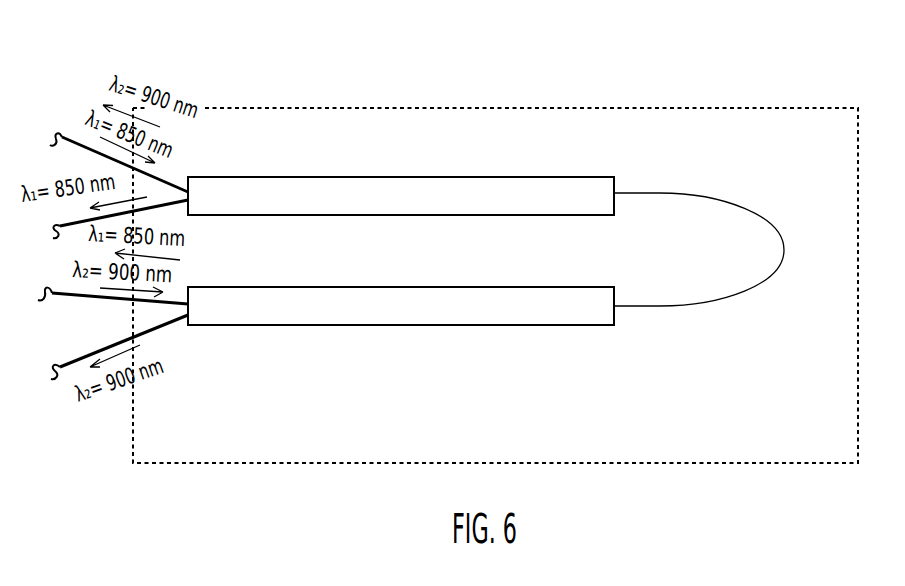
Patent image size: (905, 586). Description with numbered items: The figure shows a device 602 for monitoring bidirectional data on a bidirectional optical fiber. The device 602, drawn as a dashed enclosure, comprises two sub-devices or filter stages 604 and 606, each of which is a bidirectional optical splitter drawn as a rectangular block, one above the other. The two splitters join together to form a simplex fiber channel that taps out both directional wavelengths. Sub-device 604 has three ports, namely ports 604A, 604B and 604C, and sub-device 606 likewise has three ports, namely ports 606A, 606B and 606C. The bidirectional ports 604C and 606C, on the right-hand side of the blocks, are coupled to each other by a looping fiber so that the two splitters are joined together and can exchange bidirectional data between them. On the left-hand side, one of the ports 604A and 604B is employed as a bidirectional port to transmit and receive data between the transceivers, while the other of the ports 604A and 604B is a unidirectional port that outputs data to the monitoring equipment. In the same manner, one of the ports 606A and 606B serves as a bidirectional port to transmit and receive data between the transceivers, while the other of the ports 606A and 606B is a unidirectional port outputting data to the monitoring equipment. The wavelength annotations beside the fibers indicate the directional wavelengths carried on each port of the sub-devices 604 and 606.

The device 602 is at (556, 108).
The sub-device 604 is at (423, 207).
The sub-device 606 is at (423, 318).
The port 604A is at (186, 187).
The port 604B is at (186, 203).
The bidirectional port 604C is at (616, 191).
The port 606A is at (187, 305).
The port 606B is at (187, 316).
The bidirectional port 606C is at (616, 308).